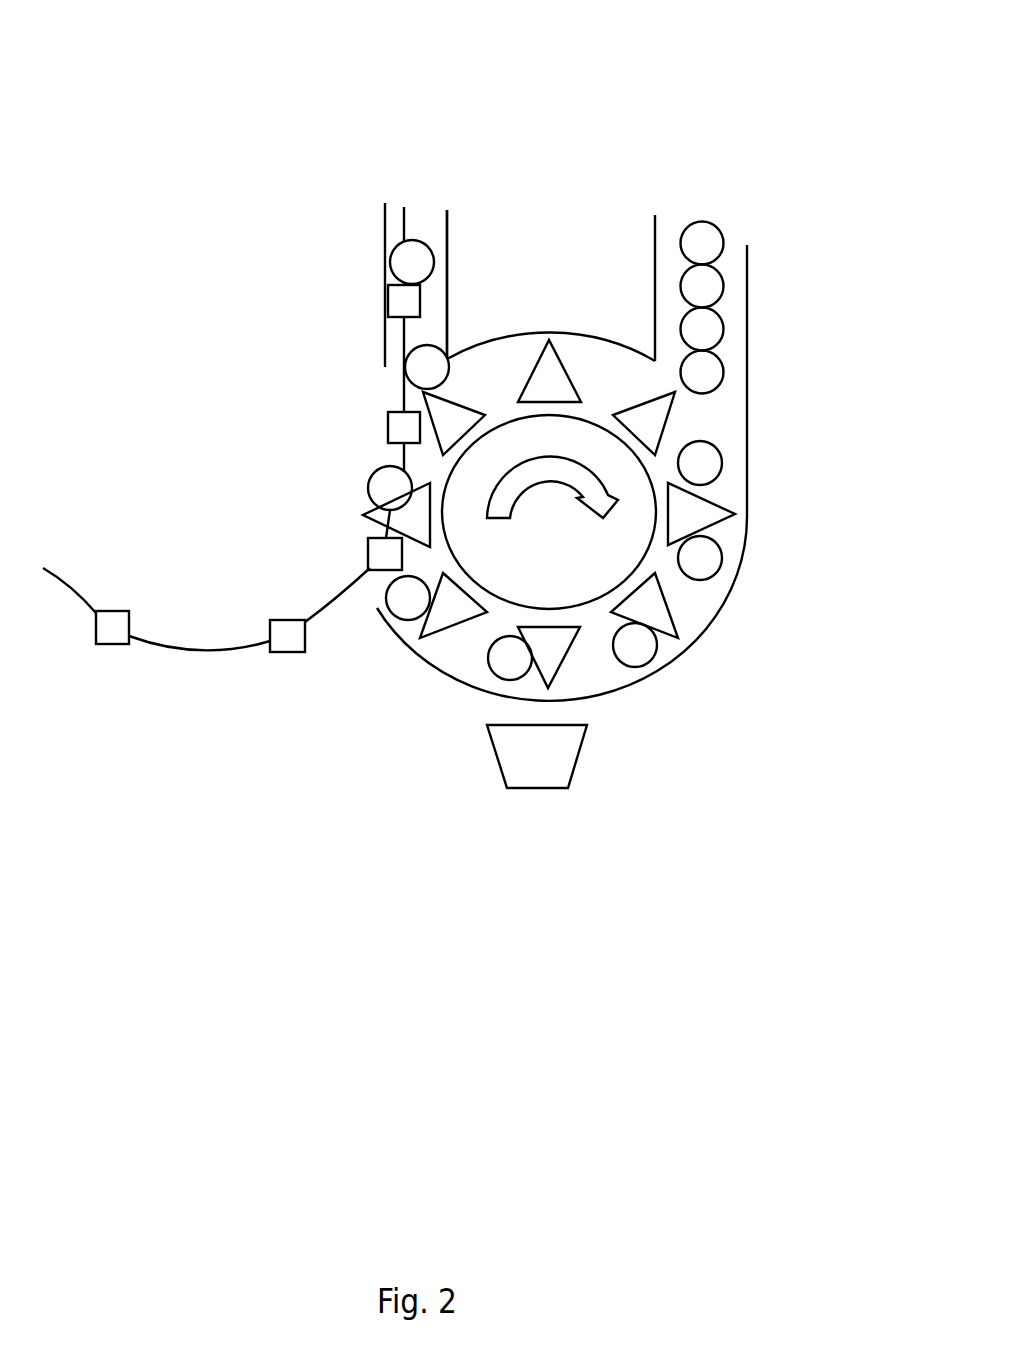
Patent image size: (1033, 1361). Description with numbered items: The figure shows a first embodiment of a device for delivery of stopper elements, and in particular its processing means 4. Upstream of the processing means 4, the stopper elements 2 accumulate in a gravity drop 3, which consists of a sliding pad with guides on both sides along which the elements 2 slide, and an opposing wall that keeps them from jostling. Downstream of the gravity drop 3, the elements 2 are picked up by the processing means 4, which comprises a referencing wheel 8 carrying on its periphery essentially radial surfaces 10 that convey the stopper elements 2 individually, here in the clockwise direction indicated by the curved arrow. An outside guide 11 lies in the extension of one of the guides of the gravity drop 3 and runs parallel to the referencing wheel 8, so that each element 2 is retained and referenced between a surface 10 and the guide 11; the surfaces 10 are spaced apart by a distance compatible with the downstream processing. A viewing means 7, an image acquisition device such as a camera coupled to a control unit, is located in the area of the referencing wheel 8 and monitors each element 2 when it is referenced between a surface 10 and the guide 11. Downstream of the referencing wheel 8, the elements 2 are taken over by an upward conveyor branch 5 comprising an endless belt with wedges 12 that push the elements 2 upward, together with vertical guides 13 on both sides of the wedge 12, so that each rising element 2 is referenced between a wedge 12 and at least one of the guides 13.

The stopper elements 2 is at (705, 218).
The gravity drop 3 is at (750, 260).
The processing means 4 is at (753, 450).
The upward conveyor branch 5 is at (453, 233).
The viewing means 7 is at (533, 772).
The referencing wheel 8 is at (603, 513).
The surfaces 10 is at (700, 497).
The outside guide 11 is at (688, 642).
The wedges 12 is at (407, 303).
The vertical guides 13 is at (383, 205).